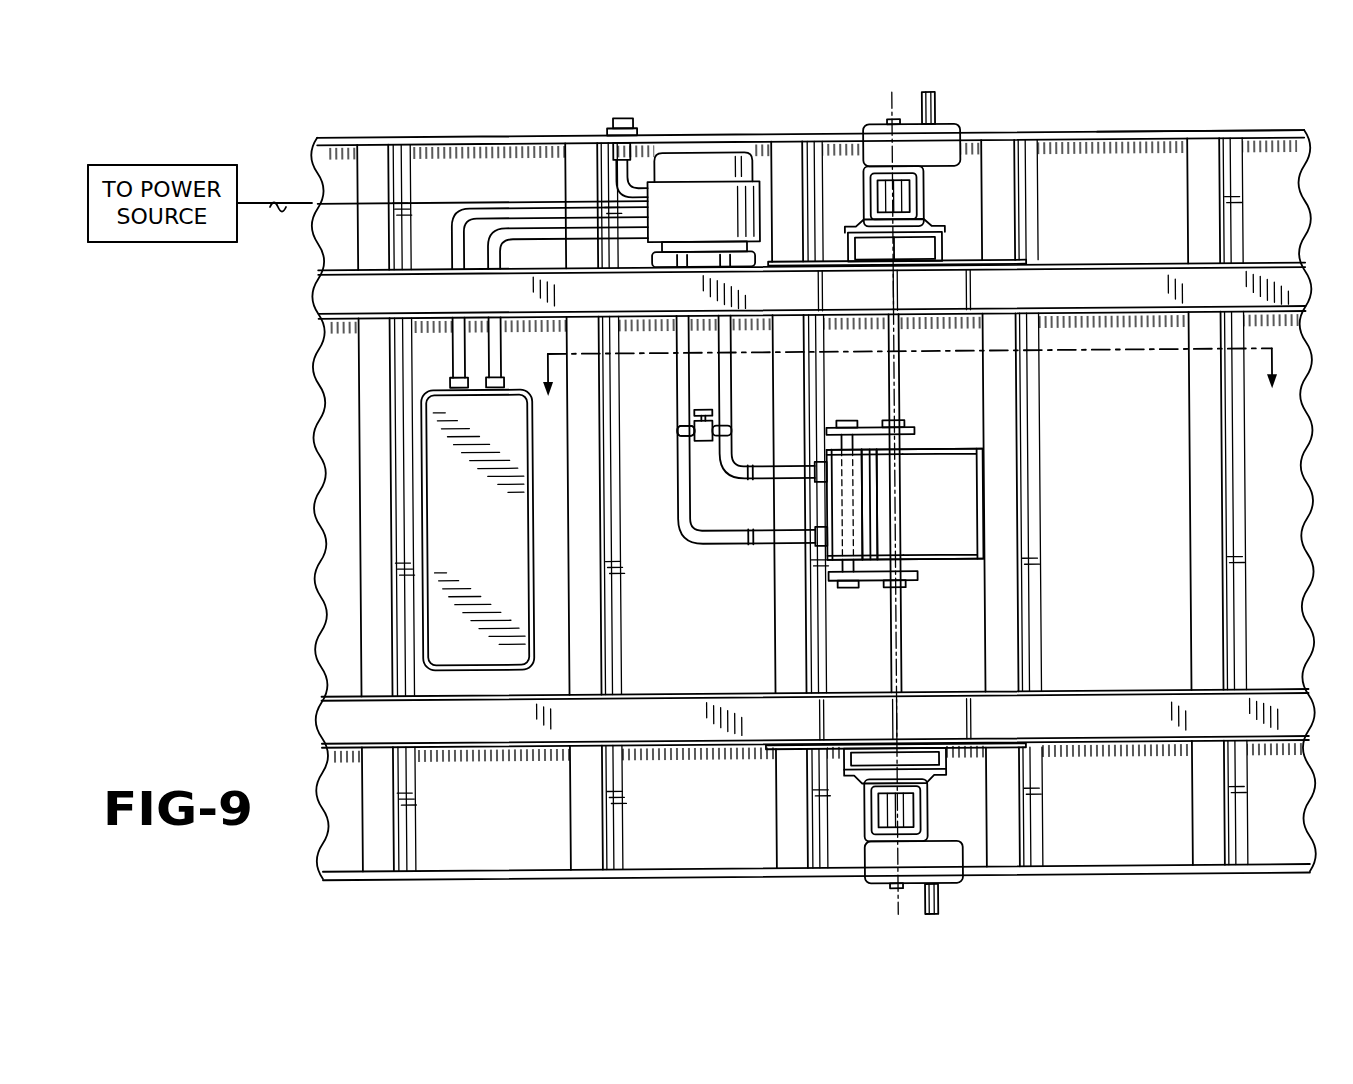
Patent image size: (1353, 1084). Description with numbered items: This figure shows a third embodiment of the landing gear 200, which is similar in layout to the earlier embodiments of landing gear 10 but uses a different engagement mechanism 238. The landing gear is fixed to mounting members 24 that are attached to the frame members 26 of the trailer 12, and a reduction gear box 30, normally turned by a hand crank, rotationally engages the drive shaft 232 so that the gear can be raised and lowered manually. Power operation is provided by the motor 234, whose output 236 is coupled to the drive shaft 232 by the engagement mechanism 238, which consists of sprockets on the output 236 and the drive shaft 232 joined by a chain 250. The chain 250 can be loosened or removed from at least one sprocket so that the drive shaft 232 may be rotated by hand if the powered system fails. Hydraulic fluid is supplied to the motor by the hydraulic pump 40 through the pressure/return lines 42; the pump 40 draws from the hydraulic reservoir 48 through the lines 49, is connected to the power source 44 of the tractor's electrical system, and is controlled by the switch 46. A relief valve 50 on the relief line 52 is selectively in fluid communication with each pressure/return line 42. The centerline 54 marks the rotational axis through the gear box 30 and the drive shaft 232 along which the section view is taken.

The landing gear 200 is at (255, 136).
The trailer 12 is at (1118, 122).
The landing gear 10 is at (911, 385).
The mounting members 24 is at (998, 262).
The frame members 26 is at (1138, 274).
The reduction gear box 30 is at (950, 125).
The hydraulic pump 40 is at (700, 167).
The pressure/return lines 42 is at (728, 479).
The power source 44 is at (166, 243).
The switch 46 is at (622, 117).
The hydraulic reservoir 48 is at (462, 546).
The lines 49 is at (531, 230).
The relief valve 50 is at (704, 409).
The relief line 52 is at (678, 430).
The shaft axis 54 is at (893, 100).
The drive shaft 232 is at (903, 653).
The motor 234 is at (880, 511).
The output 236 is at (848, 445).
The engagement mechanism 238 is at (882, 410).
The chain 250 is at (915, 432).